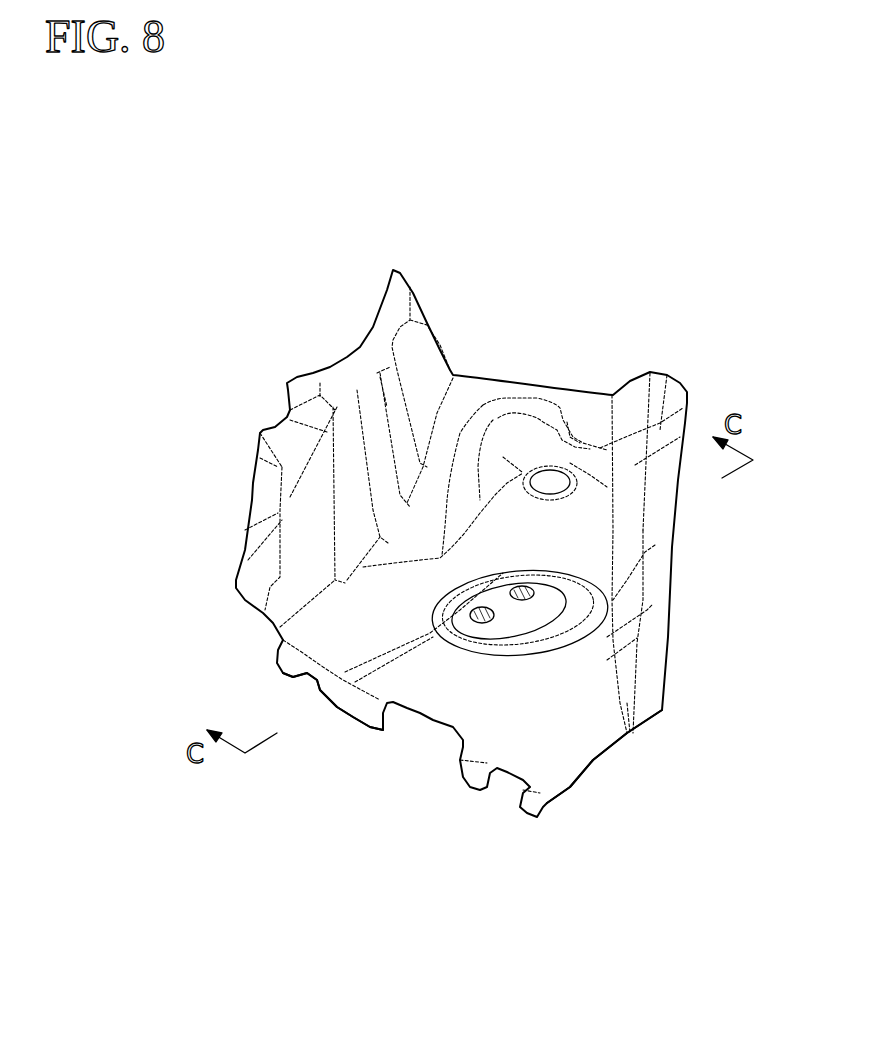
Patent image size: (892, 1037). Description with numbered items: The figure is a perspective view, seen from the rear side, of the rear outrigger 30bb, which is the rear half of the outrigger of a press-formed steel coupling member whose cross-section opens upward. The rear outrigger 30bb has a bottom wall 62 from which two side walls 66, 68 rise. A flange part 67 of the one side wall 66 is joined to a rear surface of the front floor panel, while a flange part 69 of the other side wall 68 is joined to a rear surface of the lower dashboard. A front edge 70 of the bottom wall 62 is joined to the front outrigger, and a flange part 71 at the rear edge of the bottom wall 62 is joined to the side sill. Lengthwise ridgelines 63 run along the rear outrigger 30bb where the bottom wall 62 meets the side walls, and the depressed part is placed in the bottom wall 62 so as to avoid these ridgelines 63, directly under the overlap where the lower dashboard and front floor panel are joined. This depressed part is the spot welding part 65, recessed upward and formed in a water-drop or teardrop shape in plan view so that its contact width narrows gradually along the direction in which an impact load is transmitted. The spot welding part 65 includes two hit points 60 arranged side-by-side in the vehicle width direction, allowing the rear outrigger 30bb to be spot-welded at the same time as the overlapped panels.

The rear outrigger 30bb is at (591, 265).
The hit points 60 is at (492, 620).
The bottom wall 62 is at (573, 750).
The ridgelines 63 is at (613, 530).
The spot welding part 65 is at (463, 622).
The side wall 66 is at (685, 423).
The flange part 67 is at (658, 580).
The side wall 68 is at (425, 367).
The flange part 69 is at (363, 363).
The front edge 70 is at (542, 390).
The flange part 71 is at (363, 710).